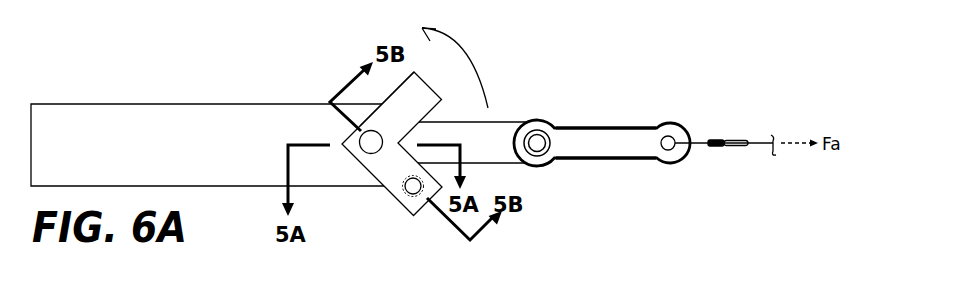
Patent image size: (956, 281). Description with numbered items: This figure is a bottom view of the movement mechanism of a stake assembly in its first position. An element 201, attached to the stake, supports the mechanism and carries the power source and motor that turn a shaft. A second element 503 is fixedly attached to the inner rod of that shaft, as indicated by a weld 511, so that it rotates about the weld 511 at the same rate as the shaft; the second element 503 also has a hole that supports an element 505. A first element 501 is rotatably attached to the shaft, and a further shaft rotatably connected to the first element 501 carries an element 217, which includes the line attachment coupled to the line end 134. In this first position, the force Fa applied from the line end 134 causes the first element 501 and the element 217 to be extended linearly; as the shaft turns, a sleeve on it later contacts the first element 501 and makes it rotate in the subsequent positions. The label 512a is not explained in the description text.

The element 201 is at (92, 104).
The second element 503 is at (414, 72).
The element 505 is at (415, 195).
The weld 511 is at (360, 144).
The engagement surface 512a is at (337, 67).
The element 217 is at (583, 128).
The first element 501 is at (517, 165).
The line end 134 is at (720, 140).